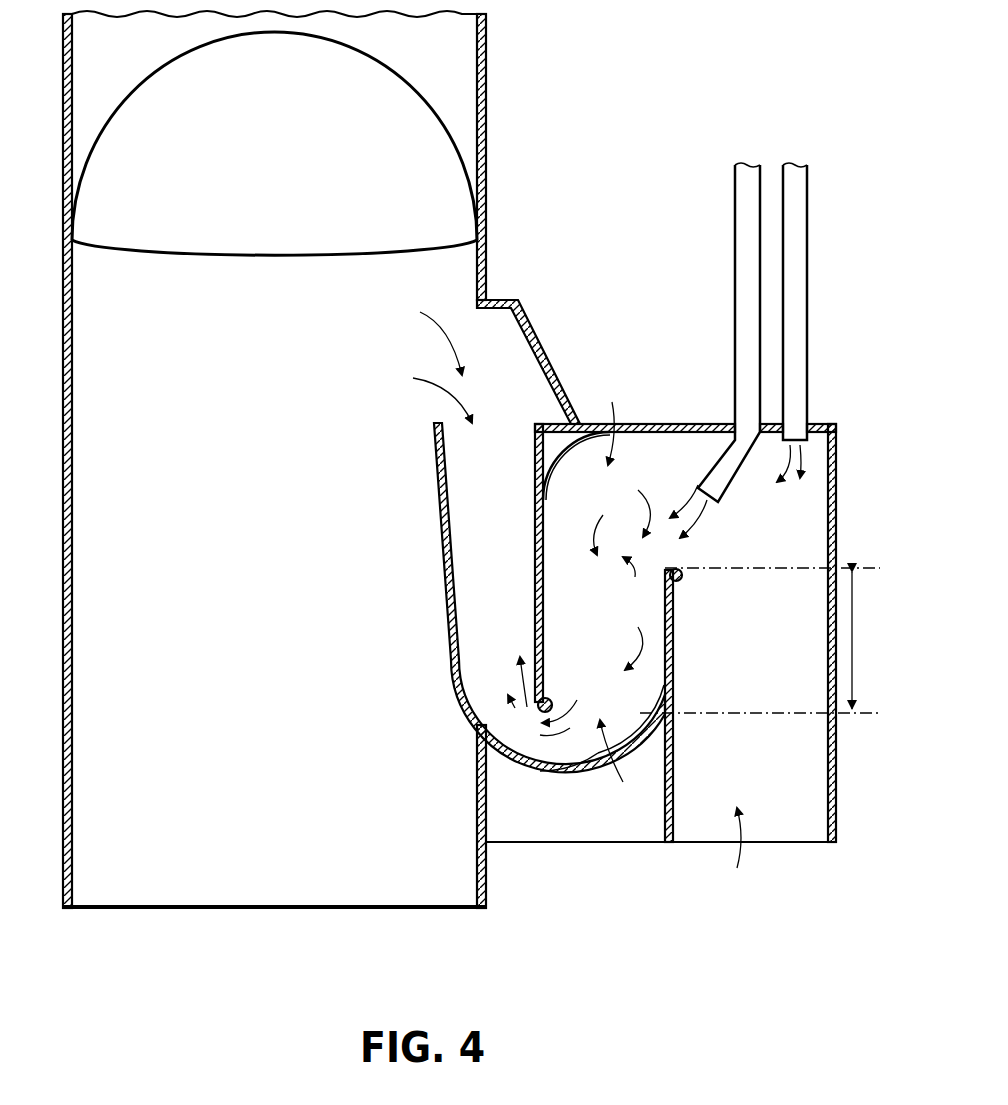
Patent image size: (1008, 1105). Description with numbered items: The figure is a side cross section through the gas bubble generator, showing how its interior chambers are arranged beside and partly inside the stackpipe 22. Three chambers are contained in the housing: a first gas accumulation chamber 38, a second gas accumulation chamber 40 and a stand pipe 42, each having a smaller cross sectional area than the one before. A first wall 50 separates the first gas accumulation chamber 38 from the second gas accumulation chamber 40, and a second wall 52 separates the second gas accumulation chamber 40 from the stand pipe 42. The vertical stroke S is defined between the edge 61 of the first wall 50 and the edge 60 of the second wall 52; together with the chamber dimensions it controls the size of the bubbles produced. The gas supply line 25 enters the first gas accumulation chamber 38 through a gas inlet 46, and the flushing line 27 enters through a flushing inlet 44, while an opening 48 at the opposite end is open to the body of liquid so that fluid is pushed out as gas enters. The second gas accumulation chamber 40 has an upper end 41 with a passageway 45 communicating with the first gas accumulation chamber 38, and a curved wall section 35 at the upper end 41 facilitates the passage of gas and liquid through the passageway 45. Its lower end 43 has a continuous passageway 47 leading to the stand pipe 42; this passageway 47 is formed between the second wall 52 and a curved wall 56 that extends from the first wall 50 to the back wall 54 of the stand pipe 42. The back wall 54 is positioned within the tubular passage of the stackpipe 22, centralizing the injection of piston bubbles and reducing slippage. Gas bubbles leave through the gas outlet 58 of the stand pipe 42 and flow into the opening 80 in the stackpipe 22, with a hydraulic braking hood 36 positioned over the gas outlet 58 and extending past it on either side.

The stackpipe 22 is at (486, 82).
The gas supply line 25 is at (807, 237).
The flushing line 27 is at (735, 233).
The curved wall section 35 is at (565, 452).
The hydraulic braking hood 36 is at (541, 348).
The first gas accumulation chamber 38 is at (768, 703).
The second gas accumulation chamber 40 is at (614, 638).
The upper end 41 is at (613, 416).
The stand pipe 42 is at (508, 580).
The lower end 43 is at (631, 755).
The flushing inlet 44 is at (735, 427).
The passageway 45 is at (674, 483).
The gas inlet 46 is at (812, 427).
The continuous passageway 47 is at (538, 742).
The opening 48 is at (738, 859).
The first wall 50 is at (673, 630).
The second wall 52 is at (535, 618).
The back wall 54 is at (443, 578).
The curved wall 56 is at (530, 770).
The gas outlet 58 is at (425, 389).
The edge of second wall 60 is at (553, 701).
The edge of first wall 61 is at (683, 571).
The opening in stackpipe 80 is at (434, 325).
The vertical stroke S is at (760, 640).